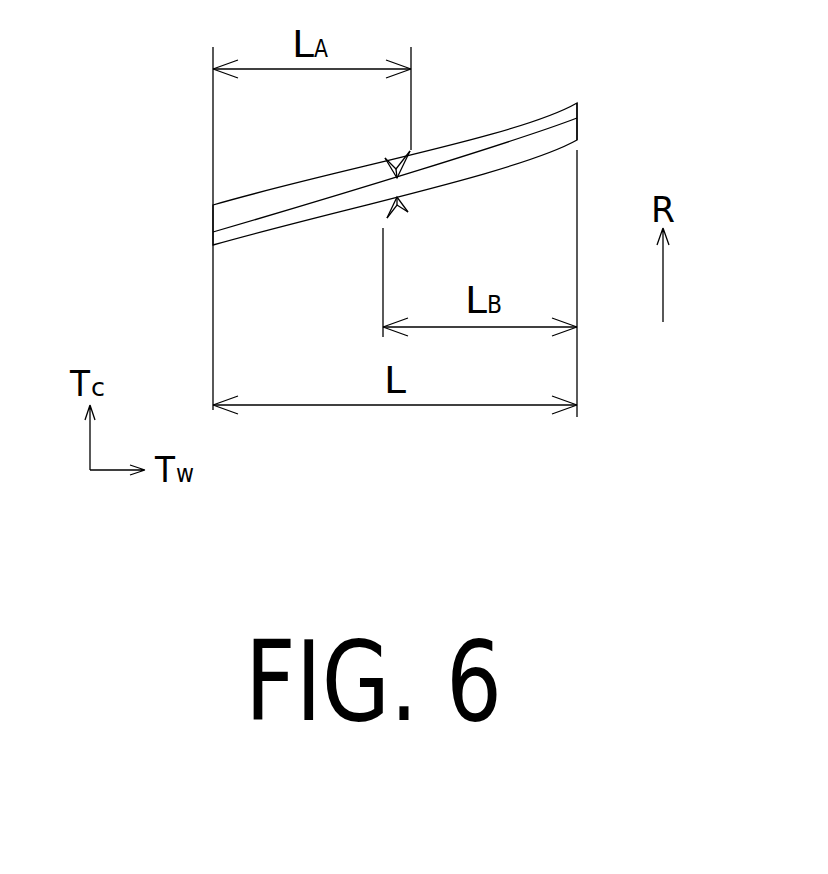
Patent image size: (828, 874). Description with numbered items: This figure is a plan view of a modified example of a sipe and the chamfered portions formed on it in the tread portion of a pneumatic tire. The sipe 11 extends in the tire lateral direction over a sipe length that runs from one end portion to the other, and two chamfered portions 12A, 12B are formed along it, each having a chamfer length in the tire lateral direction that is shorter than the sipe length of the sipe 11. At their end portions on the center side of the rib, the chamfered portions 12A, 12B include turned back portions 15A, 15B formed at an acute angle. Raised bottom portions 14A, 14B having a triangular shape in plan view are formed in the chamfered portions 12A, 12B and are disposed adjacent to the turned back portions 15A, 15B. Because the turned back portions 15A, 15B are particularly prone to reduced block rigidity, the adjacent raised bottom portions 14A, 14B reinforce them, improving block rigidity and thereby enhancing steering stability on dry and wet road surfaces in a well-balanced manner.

The sipe 11 is at (566, 111).
The chamfered portion 12A is at (254, 207).
The chamfered portion 12B is at (540, 151).
The raised bottom portion 14A is at (384, 158).
The raised bottom portion 14B is at (409, 209).
The turned back portion 15A is at (412, 149).
The turned back portion 15B is at (386, 219).